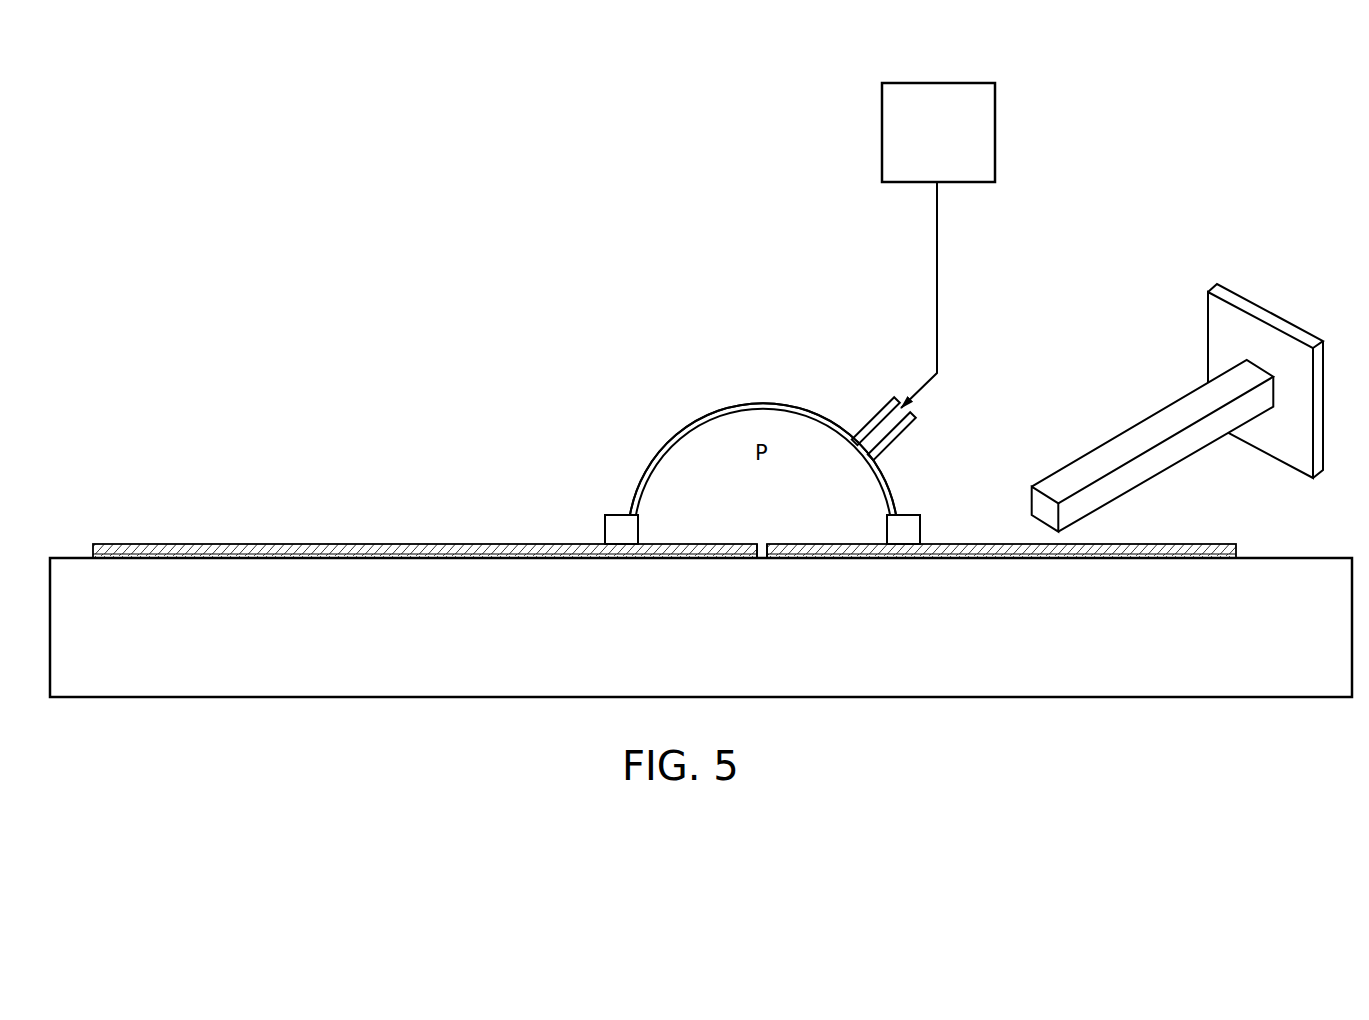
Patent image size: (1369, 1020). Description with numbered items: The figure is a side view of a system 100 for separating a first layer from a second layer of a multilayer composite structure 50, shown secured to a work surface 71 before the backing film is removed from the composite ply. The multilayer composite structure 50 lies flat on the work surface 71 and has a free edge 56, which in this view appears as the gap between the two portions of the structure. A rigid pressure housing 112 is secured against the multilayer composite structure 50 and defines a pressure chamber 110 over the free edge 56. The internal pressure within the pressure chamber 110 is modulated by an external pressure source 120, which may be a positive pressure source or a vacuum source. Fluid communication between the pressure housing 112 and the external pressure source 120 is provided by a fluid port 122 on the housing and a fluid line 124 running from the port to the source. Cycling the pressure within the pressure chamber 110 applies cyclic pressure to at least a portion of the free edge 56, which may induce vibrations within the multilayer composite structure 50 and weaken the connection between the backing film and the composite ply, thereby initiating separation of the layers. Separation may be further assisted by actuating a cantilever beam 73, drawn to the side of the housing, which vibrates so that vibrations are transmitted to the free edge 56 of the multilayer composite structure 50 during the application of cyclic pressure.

The system 100 is at (469, 226).
The work surface 71 is at (1068, 699).
The multilayer composite structure 50 is at (733, 540).
The free edge 56 is at (766, 544).
The pressure chamber 110 is at (680, 480).
The pressure housing 112 is at (684, 419).
The fluid port 122 is at (872, 418).
The fluid line 124 is at (937, 273).
The external pressure source 120 is at (995, 130).
The cantilever beam 73 is at (1176, 345).